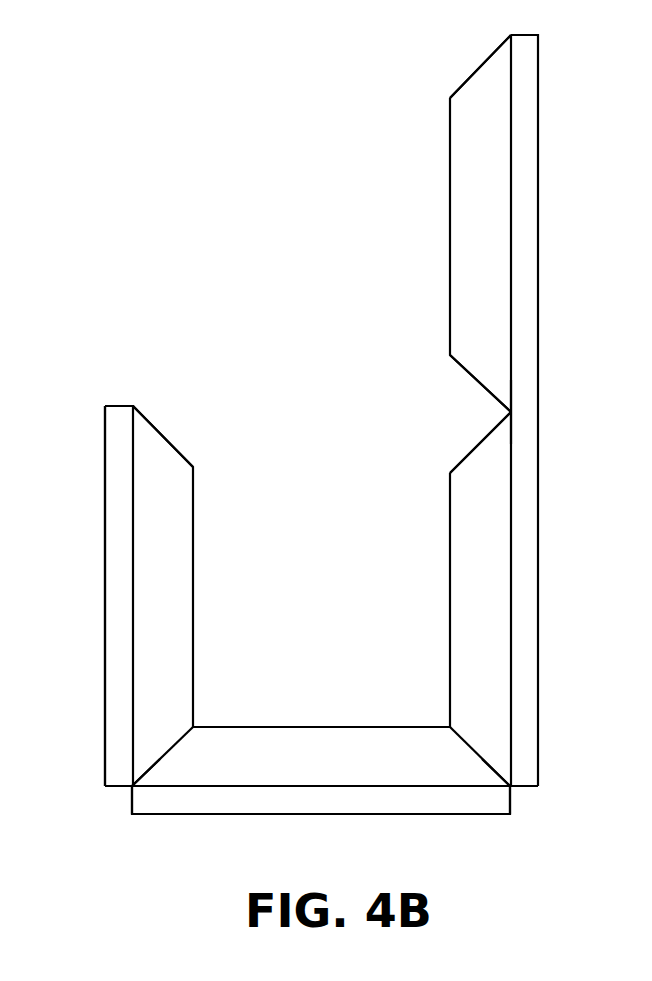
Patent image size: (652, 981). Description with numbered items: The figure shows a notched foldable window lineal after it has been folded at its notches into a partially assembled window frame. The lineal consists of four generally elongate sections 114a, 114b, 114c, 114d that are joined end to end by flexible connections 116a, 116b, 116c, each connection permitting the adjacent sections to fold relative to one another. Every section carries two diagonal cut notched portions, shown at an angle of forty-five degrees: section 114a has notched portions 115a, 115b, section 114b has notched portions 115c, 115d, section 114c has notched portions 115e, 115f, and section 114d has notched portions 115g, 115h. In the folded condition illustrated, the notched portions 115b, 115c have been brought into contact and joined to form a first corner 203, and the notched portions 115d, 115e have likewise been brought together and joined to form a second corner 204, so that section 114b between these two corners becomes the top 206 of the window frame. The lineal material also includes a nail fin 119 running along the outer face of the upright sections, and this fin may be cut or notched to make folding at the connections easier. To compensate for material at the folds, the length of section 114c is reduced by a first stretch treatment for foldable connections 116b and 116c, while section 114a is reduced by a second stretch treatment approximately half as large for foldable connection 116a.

The elongate section 114a is at (152, 532).
The elongate section 114b is at (260, 760).
The elongate section 114c is at (498, 538).
The elongate section 114d is at (498, 247).
The diagonal cut notched portion 115a is at (165, 436).
The diagonal cut notched portion 115b is at (177, 742).
The diagonal cut notched portion 115c is at (183, 738).
The diagonal cut notched portion 115d is at (463, 743).
The diagonal cut notched portion 115e is at (477, 752).
The diagonal cut notched portion 115f is at (468, 457).
The diagonal cut notched portion 115g is at (468, 372).
The diagonal cut notched portion 115h is at (474, 73).
The connection 116a is at (127, 792).
The connection 116b is at (520, 800).
The connection 116c is at (511, 412).
The nail fin 119 is at (118, 626).
The corner 203 is at (148, 770).
The corner 204 is at (500, 776).
The top of the window frame 206 is at (380, 818).